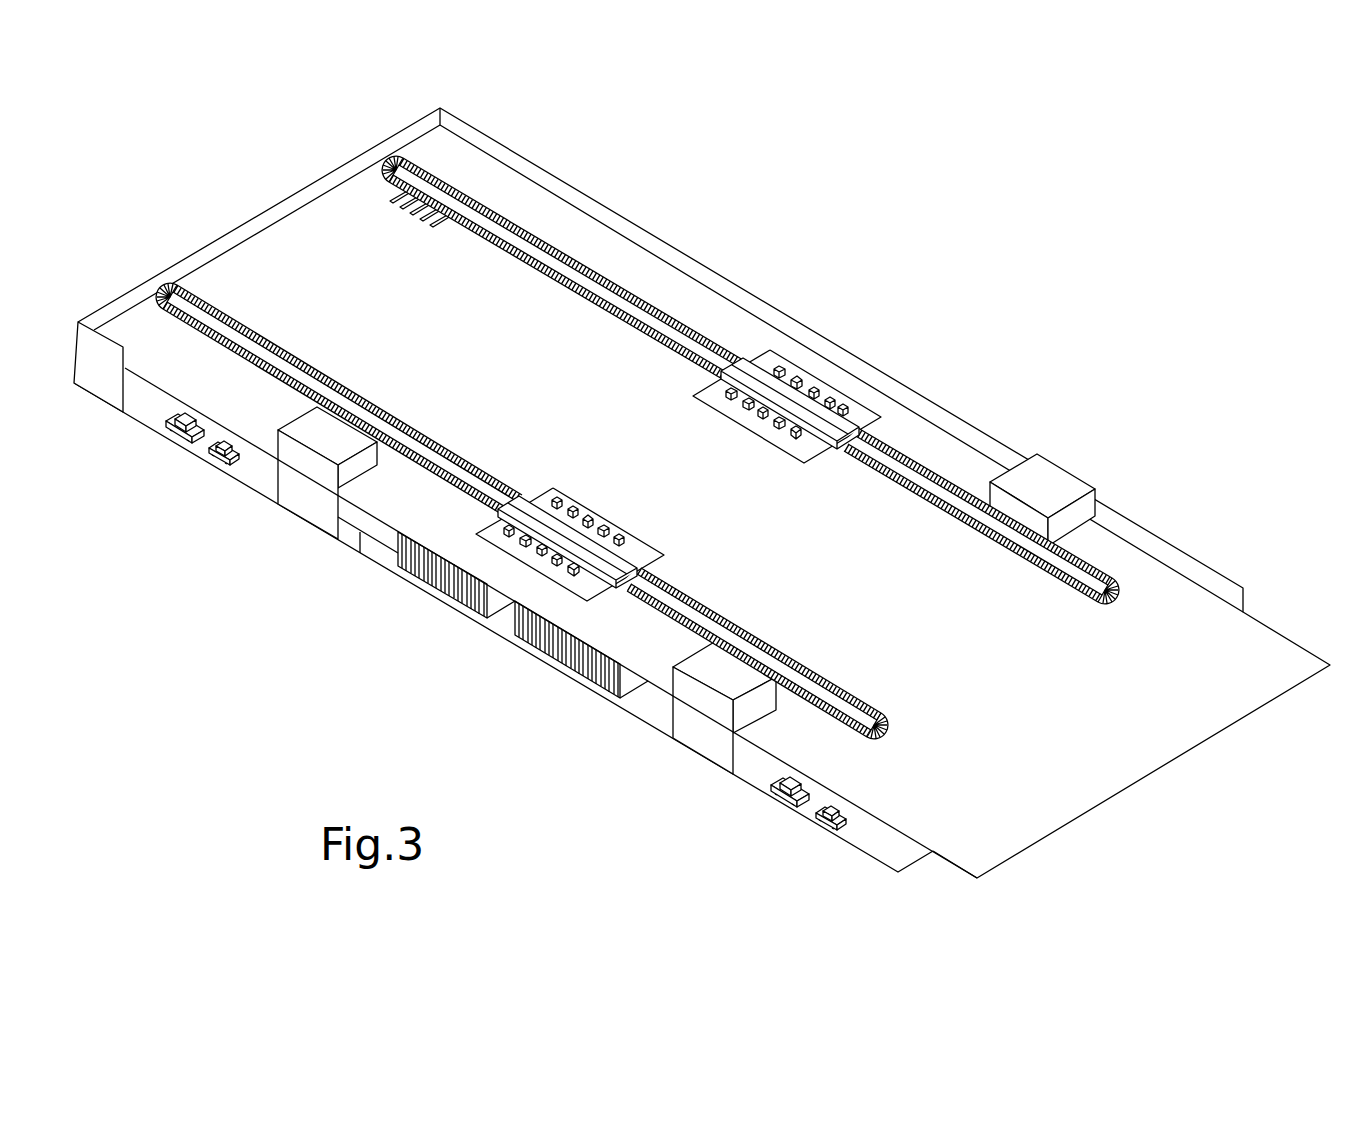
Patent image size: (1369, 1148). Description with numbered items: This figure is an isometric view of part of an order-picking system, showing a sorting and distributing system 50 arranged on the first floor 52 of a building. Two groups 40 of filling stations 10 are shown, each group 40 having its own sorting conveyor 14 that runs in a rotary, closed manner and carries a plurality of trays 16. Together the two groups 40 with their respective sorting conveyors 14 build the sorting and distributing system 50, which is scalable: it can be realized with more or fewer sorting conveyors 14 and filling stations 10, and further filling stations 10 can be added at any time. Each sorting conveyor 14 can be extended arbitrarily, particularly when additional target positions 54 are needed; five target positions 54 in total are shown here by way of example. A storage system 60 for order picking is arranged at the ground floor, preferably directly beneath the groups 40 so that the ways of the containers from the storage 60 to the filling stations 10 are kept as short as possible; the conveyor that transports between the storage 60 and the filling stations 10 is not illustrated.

The filling station 10 is at (727, 396).
The sorting conveyor 14 is at (893, 731).
The tray 16 is at (652, 468).
The group of filling stations 40 is at (652, 468).
The sorting and distributing system 50 is at (410, 497).
The first floor 52 is at (964, 825).
The target position 54 is at (397, 205).
The storage system 60 is at (449, 583).